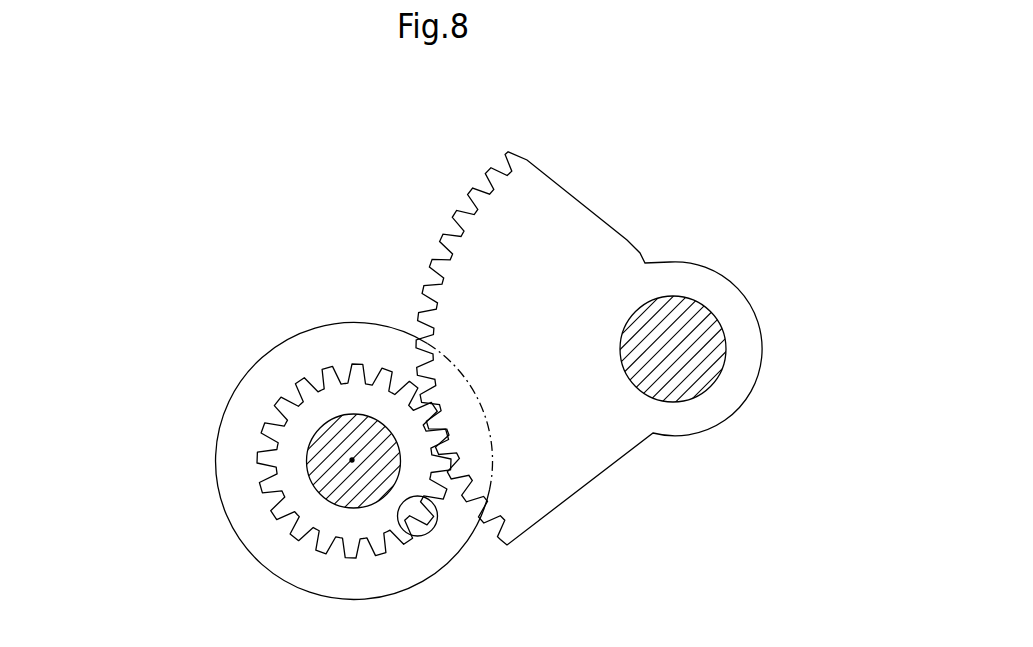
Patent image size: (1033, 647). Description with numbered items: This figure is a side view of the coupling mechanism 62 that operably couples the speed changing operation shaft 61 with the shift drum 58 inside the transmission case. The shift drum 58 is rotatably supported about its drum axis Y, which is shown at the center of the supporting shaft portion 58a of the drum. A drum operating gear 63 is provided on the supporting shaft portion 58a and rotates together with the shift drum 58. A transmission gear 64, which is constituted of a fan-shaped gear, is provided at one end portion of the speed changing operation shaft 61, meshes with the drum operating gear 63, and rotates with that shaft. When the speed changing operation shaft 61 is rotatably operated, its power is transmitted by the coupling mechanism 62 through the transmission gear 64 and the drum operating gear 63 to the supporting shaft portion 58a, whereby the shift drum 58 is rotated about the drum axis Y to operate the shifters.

The coupling mechanism 62 is at (198, 165).
The transmission gear 64 is at (497, 213).
The shift drum 58 is at (350, 330).
The drum operating gear 63 is at (318, 402).
The supporting shaft portion 58a is at (323, 450).
The speed changing operation shaft 61 is at (683, 370).
The drum axis Y is at (352, 460).